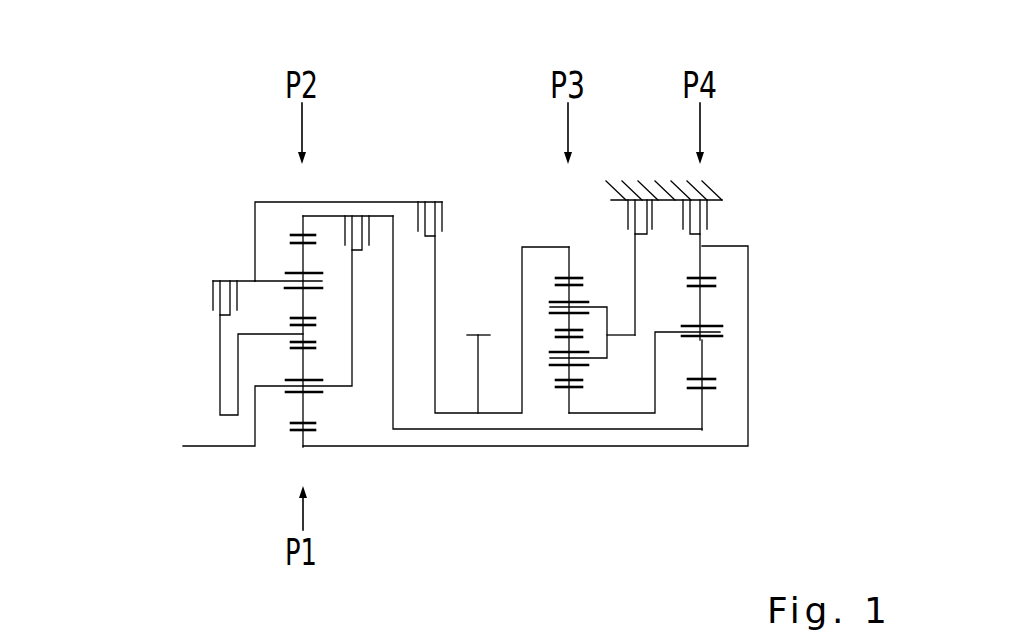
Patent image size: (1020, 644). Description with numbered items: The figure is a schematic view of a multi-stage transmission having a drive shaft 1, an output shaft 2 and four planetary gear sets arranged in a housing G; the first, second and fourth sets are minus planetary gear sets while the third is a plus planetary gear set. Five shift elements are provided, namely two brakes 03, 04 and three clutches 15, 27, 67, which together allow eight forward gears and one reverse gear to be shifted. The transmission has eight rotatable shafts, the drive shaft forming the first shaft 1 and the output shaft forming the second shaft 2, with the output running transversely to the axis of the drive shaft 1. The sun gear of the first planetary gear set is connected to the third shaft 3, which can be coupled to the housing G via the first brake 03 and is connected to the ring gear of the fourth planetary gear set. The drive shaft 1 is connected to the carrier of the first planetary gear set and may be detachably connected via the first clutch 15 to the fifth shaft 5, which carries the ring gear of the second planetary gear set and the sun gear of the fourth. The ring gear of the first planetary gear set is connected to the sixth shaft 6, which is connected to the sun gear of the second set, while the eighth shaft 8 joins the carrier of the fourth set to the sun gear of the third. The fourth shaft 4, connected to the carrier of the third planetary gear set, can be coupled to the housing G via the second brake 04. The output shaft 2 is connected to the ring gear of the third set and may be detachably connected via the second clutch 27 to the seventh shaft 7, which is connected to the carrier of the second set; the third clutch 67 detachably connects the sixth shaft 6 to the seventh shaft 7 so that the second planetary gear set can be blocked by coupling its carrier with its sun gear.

The drive shaft 1 is at (212, 448).
The output shaft 2 is at (552, 246).
The third shaft 3 is at (703, 262).
The fourth shaft 4 is at (622, 336).
The fifth shaft 5 is at (302, 226).
The sixth shaft 6 is at (218, 347).
The seventh shaft 7 is at (338, 201).
The eighth shaft 8 is at (720, 332).
The first clutch 15 is at (364, 216).
The second clutch 27 is at (437, 201).
The third clutch 67 is at (219, 280).
The first brake 03 is at (705, 201).
The second brake 04 is at (645, 199).
The housing G is at (701, 186).